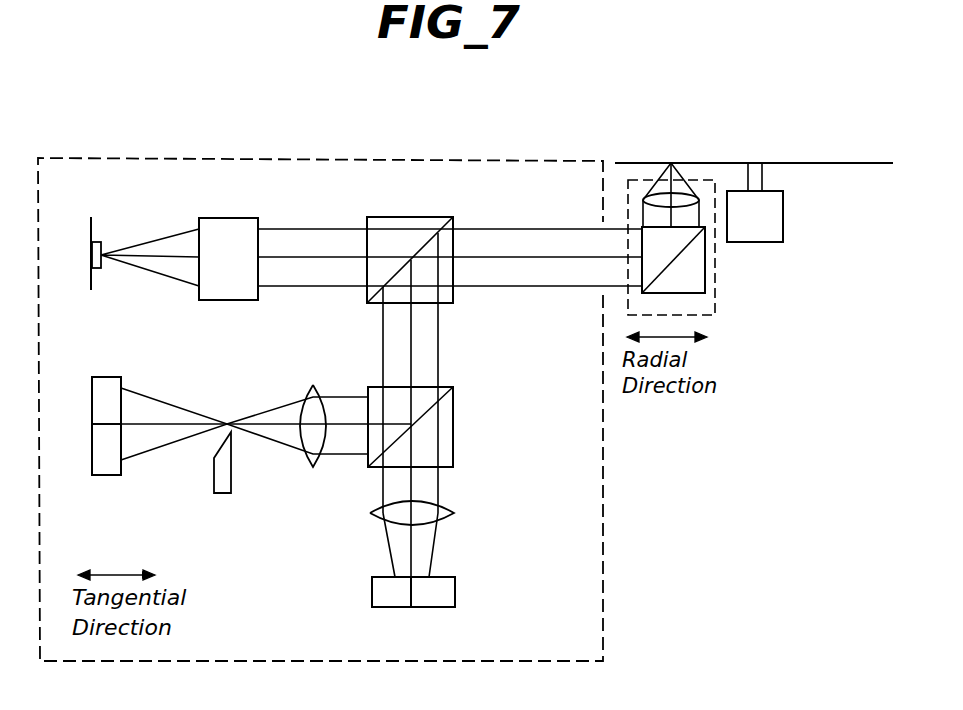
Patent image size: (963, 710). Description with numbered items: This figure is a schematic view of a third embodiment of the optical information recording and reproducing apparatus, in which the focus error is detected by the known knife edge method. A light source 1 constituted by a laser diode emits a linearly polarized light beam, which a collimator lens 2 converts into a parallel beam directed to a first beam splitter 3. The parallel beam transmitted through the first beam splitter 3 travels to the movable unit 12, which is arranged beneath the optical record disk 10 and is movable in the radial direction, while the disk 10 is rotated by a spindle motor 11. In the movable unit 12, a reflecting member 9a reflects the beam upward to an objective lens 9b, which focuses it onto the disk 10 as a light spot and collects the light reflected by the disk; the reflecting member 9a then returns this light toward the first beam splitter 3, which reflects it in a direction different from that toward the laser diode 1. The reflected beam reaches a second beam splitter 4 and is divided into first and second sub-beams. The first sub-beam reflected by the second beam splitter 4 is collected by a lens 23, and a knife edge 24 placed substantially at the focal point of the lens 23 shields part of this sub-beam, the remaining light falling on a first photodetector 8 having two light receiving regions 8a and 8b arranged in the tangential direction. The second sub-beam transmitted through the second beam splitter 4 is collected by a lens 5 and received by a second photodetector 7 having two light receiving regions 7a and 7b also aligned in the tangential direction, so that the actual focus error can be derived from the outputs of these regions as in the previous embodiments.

The light source 1 is at (97, 217).
The collimator lens 2 is at (230, 218).
The first beam splitter 3 is at (405, 217).
The second beam splitter 4 is at (453, 430).
The lens 5 is at (454, 510).
The second photodetector 7 is at (462, 591).
The light receiving region 7a is at (392, 597).
The light receiving region 7b is at (437, 597).
The first photodetector 8 is at (106, 377).
The light receiving region 8a is at (92, 400).
The light receiving region 8b is at (92, 447).
The reflecting member 9a is at (705, 255).
The objective lens 9b is at (691, 190).
The optical record disk 10 is at (836, 163).
The spindle motor 11 is at (783, 210).
The movable unit 12 is at (715, 280).
The lens 23 is at (313, 468).
The knife edge 24 is at (223, 493).